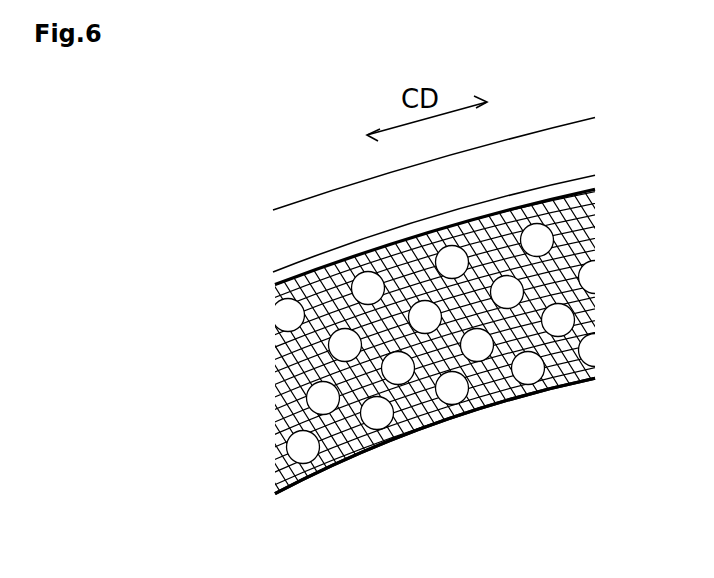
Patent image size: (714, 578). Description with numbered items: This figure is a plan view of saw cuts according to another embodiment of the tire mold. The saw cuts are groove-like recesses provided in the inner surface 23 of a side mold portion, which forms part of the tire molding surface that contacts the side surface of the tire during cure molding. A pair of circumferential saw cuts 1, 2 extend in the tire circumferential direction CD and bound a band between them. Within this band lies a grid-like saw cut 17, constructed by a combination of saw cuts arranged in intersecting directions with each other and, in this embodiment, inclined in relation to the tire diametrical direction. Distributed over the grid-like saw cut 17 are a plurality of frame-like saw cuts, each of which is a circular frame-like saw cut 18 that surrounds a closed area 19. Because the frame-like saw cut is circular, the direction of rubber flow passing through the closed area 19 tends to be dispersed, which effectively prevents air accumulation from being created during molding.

The circumferential saw cut 1 is at (315, 263).
The circumferential saw cut 2 is at (545, 393).
The grid-like saw cut 17 is at (480, 412).
The circular frame-like saw cut 18 is at (328, 466).
The closed area 19 is at (378, 418).
The inner surface 23 is at (541, 148).